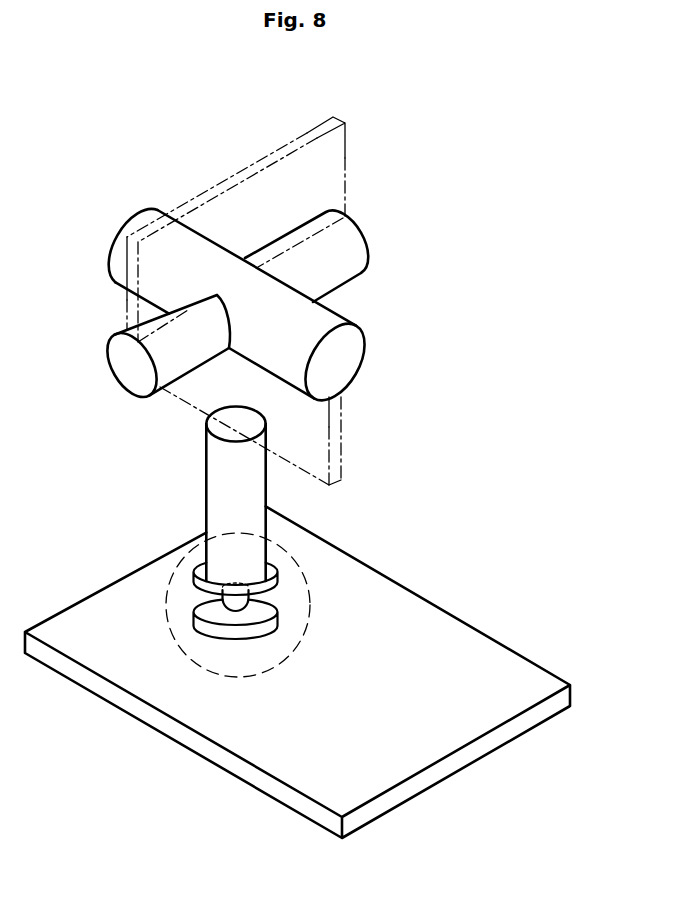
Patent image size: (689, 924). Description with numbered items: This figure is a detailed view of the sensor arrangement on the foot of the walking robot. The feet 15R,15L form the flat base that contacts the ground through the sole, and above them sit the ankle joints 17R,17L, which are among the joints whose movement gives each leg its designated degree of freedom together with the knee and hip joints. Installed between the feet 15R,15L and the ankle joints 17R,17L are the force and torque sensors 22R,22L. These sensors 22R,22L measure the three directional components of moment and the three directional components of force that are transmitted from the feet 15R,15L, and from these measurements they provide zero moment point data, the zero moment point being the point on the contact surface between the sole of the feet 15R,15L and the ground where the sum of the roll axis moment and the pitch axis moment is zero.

The ankle joints 17R,17L is at (328, 328).
The force and torque (F/T) sensors 22R,22L is at (300, 560).
The feet 15R,15L is at (163, 720).